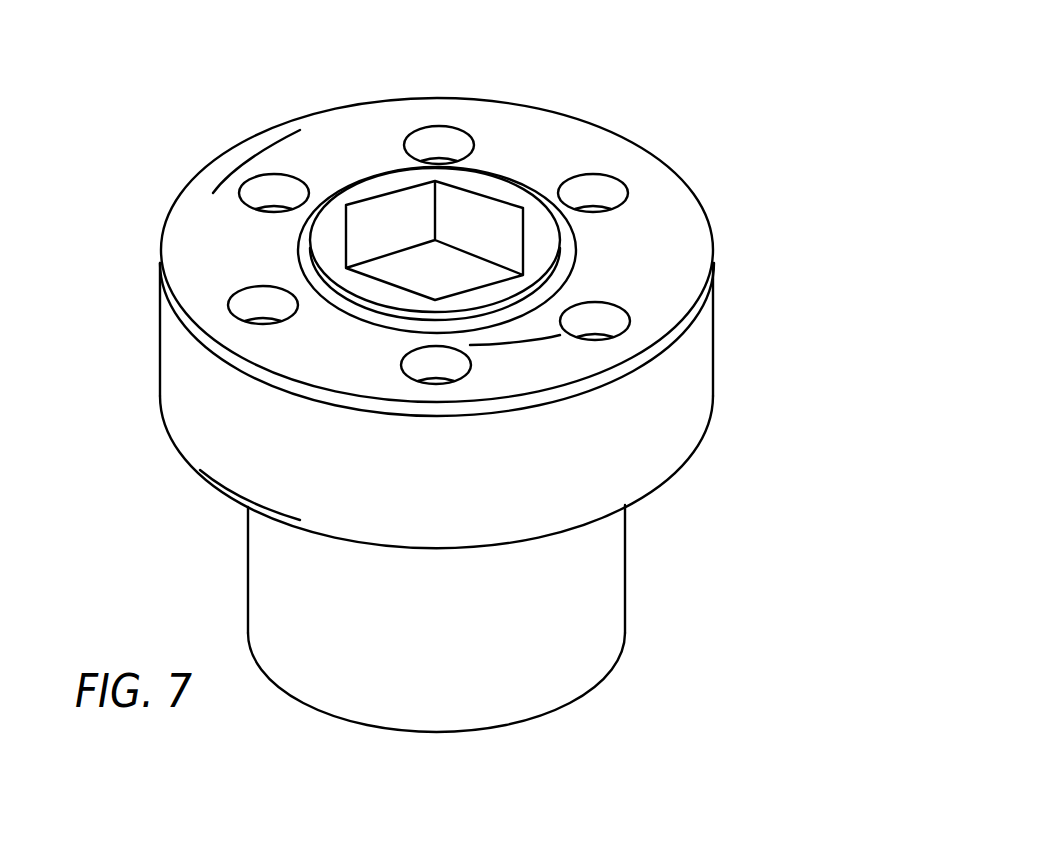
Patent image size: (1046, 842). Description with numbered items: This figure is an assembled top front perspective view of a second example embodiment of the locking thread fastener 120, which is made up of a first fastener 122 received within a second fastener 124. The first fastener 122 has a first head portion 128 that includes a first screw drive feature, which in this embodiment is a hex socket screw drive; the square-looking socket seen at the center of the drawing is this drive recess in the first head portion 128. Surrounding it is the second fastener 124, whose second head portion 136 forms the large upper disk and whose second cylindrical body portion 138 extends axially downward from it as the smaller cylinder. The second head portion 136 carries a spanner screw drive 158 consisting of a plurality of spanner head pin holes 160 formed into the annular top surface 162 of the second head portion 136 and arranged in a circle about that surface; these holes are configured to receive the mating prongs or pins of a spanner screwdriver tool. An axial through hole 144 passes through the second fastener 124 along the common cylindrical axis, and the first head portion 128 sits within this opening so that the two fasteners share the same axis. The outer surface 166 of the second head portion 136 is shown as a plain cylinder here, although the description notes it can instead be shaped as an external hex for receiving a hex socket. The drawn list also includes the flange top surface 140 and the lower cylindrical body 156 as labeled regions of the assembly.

The locking thread fastener 120 is at (752, 138).
The first fastener 122 is at (505, 178).
The second fastener 124 is at (715, 350).
The first head portion 128 is at (332, 225).
The second head portion 136 is at (173, 288).
The second cylindrical body portion 138 is at (543, 715).
The flange top surface 140 is at (212, 248).
The axial through hole 144 is at (375, 166).
The cylindrical body portion 156 is at (588, 595).
The spanner screw drive 158 is at (213, 193).
The spanner head pin holes 160 is at (418, 128).
The annular top surface 162 is at (550, 368).
The outer surface 166 is at (286, 469).